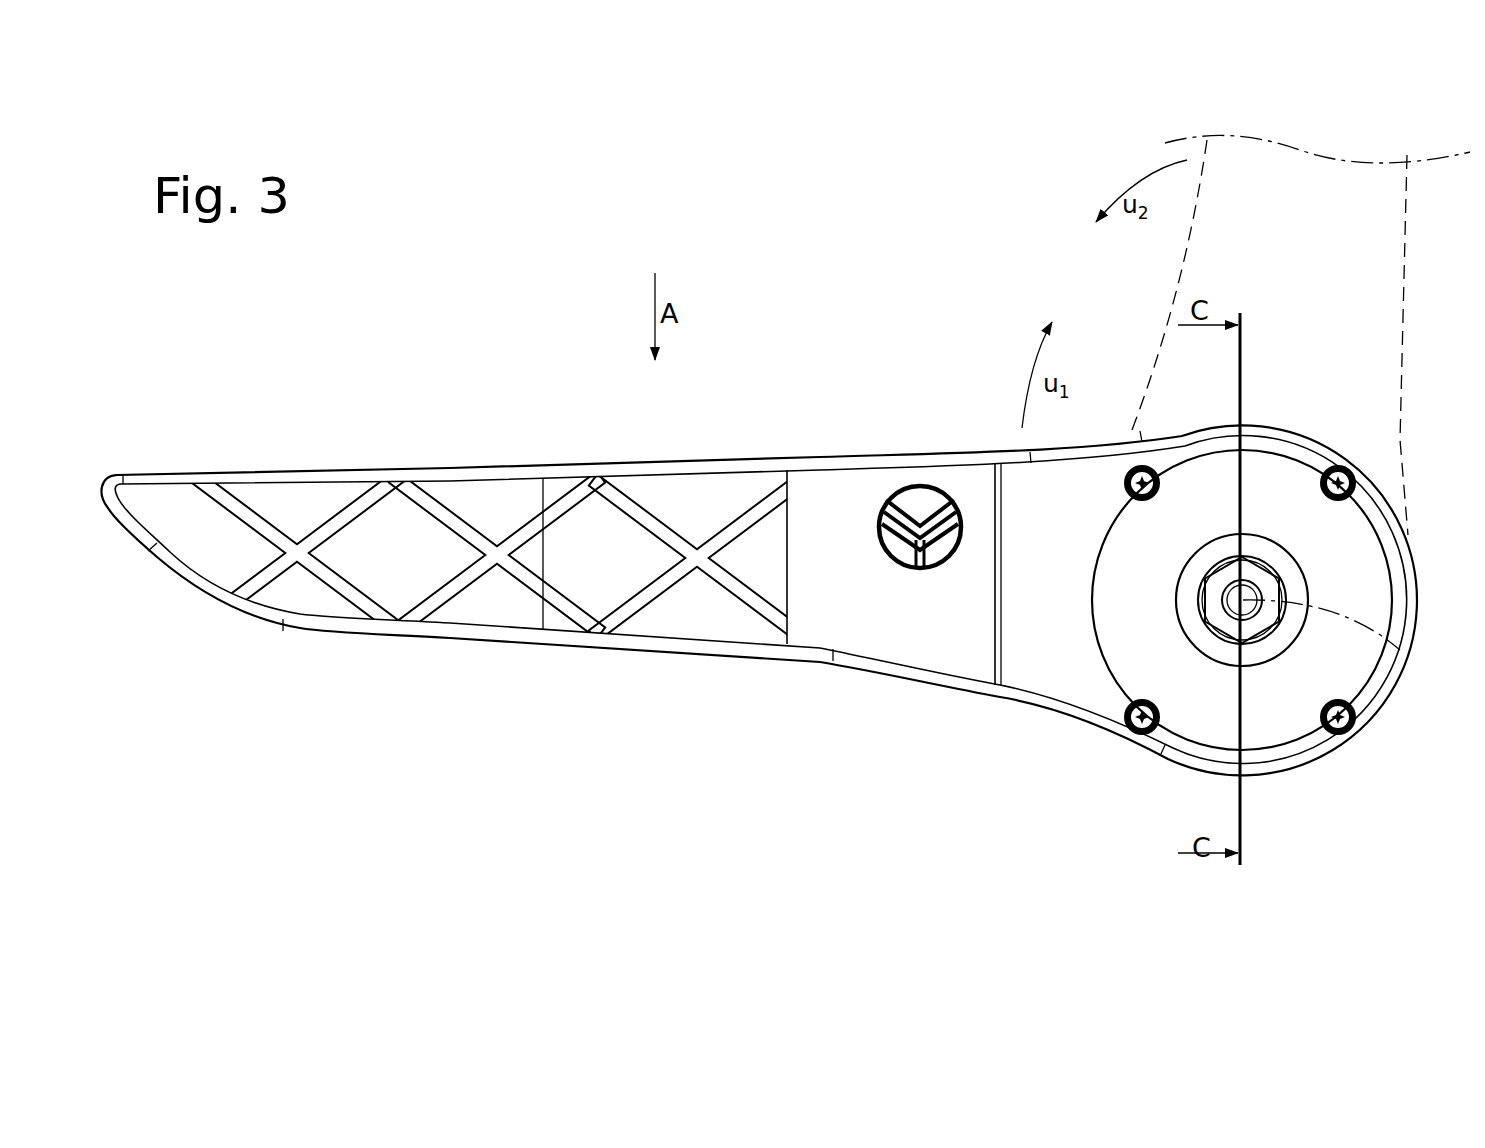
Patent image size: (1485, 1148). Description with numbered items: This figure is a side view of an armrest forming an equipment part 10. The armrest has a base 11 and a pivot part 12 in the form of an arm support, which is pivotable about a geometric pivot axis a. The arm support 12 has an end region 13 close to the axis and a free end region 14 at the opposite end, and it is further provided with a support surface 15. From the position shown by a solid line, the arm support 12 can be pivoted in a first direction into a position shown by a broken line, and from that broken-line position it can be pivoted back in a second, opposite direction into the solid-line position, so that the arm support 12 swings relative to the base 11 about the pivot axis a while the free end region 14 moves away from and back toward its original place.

The equipment part 10 is at (902, 305).
The base 11 is at (1196, 609).
The pivot part 12 is at (785, 437).
The end region close to the axis 13 is at (1400, 712).
The free end region 14 is at (137, 470).
The support surface 15 is at (495, 470).
The geometric pivot axis a is at (1400, 650).